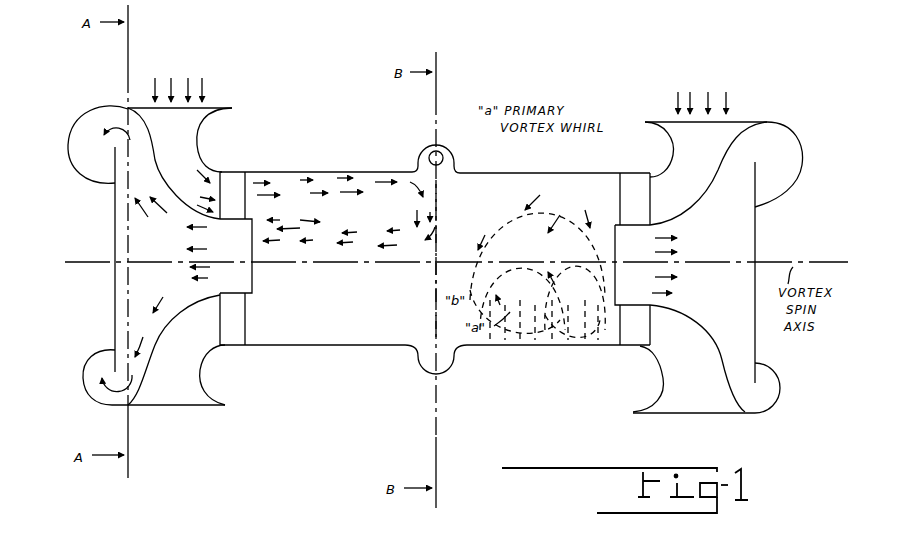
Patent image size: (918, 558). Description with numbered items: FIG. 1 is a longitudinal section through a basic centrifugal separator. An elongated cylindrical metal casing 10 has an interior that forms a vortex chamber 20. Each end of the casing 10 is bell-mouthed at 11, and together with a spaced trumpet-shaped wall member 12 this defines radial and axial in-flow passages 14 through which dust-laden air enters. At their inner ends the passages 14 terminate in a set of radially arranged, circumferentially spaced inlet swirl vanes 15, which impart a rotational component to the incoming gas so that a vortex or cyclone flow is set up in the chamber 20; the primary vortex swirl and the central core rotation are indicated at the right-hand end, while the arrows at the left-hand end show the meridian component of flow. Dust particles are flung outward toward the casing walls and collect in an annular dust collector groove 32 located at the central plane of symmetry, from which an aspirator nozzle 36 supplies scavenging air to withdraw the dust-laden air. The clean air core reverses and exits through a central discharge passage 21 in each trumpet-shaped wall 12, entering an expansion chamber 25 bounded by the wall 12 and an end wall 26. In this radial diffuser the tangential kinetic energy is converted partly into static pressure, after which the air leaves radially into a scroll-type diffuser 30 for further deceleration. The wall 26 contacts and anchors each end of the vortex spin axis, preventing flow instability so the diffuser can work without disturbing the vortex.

The cylindrical casing 10 is at (313, 347).
The bell-mouthed end 11 is at (207, 133).
The trumpet-shaped wall member 12 is at (165, 183).
The in-flow passage 14 is at (182, 140).
The inlet swirl vane 15 is at (237, 174).
The vortex chamber 20 is at (376, 216).
The central discharge passage 21 is at (253, 284).
The expansion chamber 25 is at (161, 287).
The end wall 26 is at (112, 217).
The scroll-type diffuser 30 is at (70, 139).
The dust collector groove 32 is at (455, 357).
The aspirator nozzle 36 is at (444, 154).